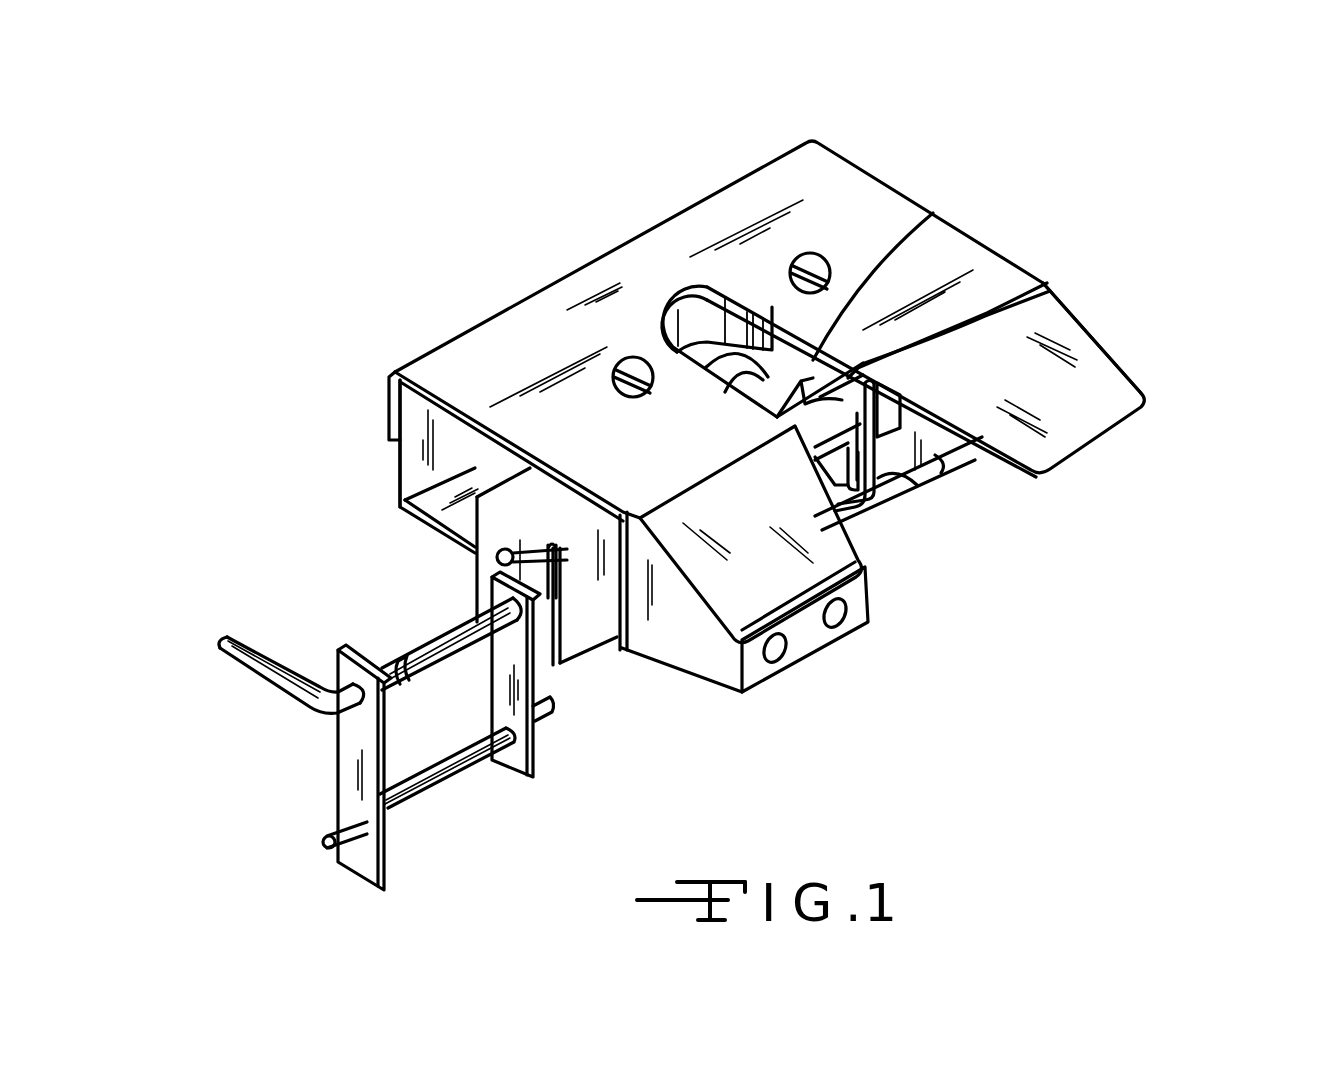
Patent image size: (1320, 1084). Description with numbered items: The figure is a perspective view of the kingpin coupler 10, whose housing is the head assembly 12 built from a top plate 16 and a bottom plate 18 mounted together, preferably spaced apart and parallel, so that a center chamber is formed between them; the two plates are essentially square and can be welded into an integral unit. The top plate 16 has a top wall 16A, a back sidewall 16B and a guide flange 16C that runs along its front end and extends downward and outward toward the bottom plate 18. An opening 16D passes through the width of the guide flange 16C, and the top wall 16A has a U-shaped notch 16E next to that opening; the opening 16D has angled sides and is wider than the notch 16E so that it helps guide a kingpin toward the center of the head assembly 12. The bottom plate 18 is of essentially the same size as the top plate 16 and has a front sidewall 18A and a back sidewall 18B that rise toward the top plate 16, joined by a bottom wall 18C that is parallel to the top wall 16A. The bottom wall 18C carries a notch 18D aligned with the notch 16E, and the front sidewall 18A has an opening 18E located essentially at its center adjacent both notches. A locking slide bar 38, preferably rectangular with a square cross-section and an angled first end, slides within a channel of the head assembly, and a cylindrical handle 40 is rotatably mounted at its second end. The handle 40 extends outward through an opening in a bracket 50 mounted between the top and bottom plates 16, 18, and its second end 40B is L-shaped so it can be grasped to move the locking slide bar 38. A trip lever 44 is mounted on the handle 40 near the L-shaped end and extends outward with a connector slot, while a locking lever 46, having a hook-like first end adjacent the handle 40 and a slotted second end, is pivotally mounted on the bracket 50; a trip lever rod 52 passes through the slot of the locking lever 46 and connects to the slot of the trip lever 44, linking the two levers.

The kingpin coupler 10 is at (441, 216).
The head assembly 12 is at (947, 105).
The top plate 16 is at (1003, 272).
The top wall 16A is at (731, 308).
The back sidewall 16B is at (391, 379).
The guide flange 16C is at (1115, 376).
The opening 16D is at (1000, 493).
The U-shaped notch 16E is at (933, 215).
The bottom plate 18 is at (397, 507).
The front sidewall 18A is at (645, 626).
The back sidewall 18B is at (397, 469).
The bottom wall 18C is at (460, 549).
The notch 18D is at (860, 514).
The opening 18E is at (920, 487).
The locking slide bar 38 is at (1043, 283).
The handle 40 is at (447, 642).
The second end of the handle 40B is at (220, 652).
The trip lever 44 is at (360, 755).
The locking lever 46 is at (525, 760).
The bracket 50 is at (558, 582).
The trip lever rod 52 is at (423, 791).